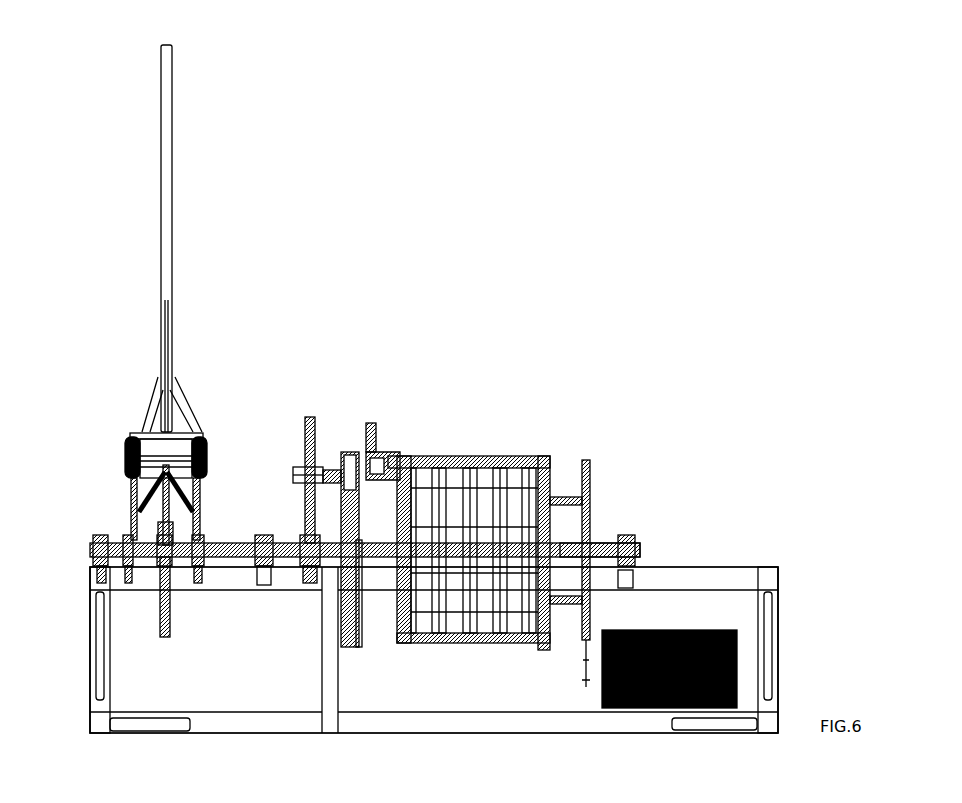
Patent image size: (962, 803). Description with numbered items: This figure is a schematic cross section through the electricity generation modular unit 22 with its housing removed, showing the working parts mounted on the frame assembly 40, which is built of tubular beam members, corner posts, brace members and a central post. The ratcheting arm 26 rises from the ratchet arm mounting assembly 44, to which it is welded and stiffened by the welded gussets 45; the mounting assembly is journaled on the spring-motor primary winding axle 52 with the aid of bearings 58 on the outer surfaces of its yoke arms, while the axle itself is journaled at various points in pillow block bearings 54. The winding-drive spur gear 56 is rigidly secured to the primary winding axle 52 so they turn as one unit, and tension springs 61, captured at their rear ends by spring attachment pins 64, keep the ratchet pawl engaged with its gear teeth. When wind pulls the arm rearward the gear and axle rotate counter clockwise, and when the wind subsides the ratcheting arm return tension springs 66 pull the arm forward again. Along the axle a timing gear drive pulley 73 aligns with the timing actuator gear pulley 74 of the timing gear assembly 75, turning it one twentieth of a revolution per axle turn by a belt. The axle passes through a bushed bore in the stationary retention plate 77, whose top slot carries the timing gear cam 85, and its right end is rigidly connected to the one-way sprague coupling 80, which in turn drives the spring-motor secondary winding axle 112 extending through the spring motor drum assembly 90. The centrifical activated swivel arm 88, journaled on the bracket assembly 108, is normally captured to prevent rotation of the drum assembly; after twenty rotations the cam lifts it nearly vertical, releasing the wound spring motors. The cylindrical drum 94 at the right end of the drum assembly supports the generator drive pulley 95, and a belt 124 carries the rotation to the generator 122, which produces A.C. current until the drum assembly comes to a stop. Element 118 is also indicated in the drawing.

The electricity generation modular unit 22 is at (742, 210).
The ratcheting arm 26 is at (172, 157).
The frame assembly 40 is at (780, 680).
The ratchet arm mounting assembly 44 is at (127, 427).
The welded gussets 45 is at (152, 400).
The spring-motor primary winding axle 52 is at (233, 558).
The pillow block bearings 54 is at (93, 565).
The winding-drive spur gear 56 is at (160, 637).
The bearings 58 is at (110, 538).
The tension springs 61 is at (196, 500).
The spring attachment pins 64 is at (190, 516).
The ratcheting arm return tension springs 66 is at (208, 456).
The timing gear drive pulley 73 is at (300, 562).
The timing actuator gear pulley 74 is at (318, 425).
The timing gear assembly 75 is at (296, 447).
The stationary retention plate 77 is at (340, 650).
The one-way sprague coupling 80 is at (367, 560).
The timing gear cam 85 is at (345, 452).
The centrifical activated swivel arm 88 is at (372, 426).
The spring motor drum assembly 90 is at (494, 450).
The cylindrical drum 94 is at (563, 490).
The generator drive pulley 95 is at (593, 483).
The bracket assembly 108 is at (388, 457).
The spring-motor secondary winding axle 112 is at (640, 550).
The plates 118 is at (520, 537).
The generator 122 is at (650, 710).
The belt 124 is at (582, 672).